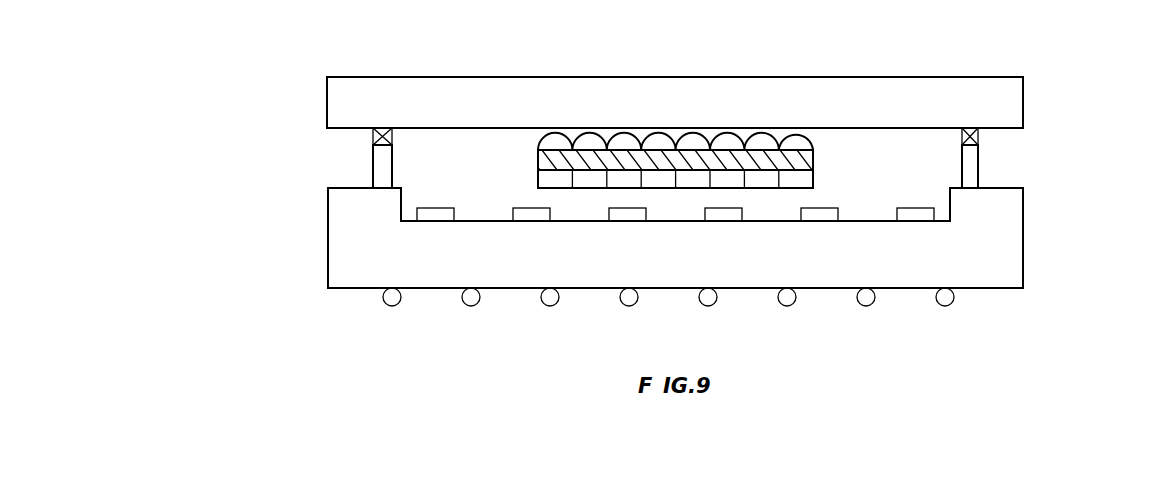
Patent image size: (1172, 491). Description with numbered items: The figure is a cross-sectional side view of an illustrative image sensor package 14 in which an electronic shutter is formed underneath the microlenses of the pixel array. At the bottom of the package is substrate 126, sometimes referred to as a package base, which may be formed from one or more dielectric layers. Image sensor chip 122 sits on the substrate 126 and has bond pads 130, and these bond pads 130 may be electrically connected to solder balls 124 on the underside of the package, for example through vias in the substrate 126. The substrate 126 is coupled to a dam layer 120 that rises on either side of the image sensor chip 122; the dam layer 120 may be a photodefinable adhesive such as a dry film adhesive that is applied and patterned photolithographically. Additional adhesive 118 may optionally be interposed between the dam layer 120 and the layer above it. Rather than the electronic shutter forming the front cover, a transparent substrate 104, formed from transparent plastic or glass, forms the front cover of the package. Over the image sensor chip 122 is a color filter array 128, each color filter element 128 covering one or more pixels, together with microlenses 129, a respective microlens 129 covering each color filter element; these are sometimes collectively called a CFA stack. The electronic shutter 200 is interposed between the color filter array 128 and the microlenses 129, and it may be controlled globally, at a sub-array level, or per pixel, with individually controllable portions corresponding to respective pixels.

The image sensor package 14 is at (257, 62).
The transparent substrate 104 is at (343, 95).
The adhesive 118 is at (980, 135).
The dam layer 120 is at (980, 165).
The microlenses 129 is at (530, 144).
The electronic shutter 200 is at (800, 160).
The color filter array 128 is at (825, 175).
The image sensor chip 122 is at (993, 247).
The substrate 126 is at (362, 251).
The bond pads 130 is at (832, 215).
The solder balls 124 is at (547, 307).